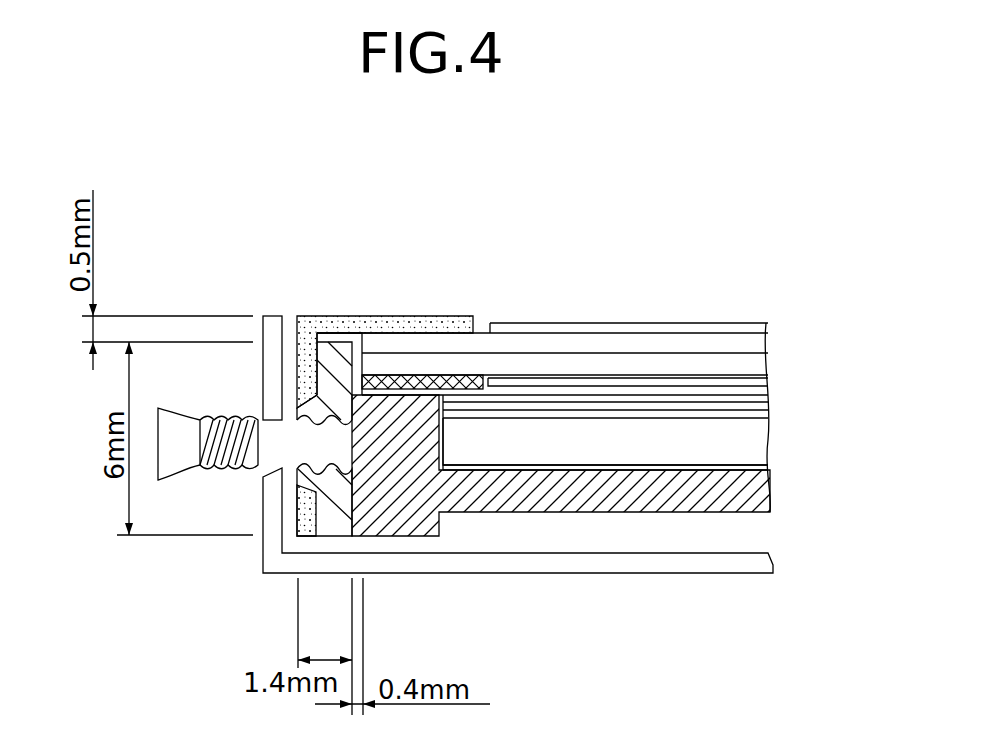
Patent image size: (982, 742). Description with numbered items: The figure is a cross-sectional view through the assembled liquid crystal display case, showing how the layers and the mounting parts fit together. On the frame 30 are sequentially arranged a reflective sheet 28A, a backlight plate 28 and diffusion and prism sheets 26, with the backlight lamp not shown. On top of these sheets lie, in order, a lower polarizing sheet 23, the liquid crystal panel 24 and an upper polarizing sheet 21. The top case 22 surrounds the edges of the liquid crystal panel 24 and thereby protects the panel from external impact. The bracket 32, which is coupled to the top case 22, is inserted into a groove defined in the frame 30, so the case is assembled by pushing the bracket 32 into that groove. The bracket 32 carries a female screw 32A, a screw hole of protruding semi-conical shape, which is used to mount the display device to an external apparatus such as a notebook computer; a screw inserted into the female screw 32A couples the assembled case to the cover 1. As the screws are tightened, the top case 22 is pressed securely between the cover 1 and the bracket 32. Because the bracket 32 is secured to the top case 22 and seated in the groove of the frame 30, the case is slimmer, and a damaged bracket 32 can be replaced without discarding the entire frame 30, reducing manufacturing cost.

The cover 1 is at (773, 570).
The upper polarizing sheet 21 is at (768, 323).
The top case 22 is at (442, 322).
The lower polarizing sheet 23 is at (770, 378).
The liquid crystal panel 24 is at (767, 372).
The diffusion and prism sheets 26 is at (782, 393).
The backlight plate 28 is at (753, 442).
The reflective sheet 28A is at (762, 468).
The frame 30 is at (770, 512).
The bracket 32 is at (317, 515).
The female screw 32A is at (310, 443).